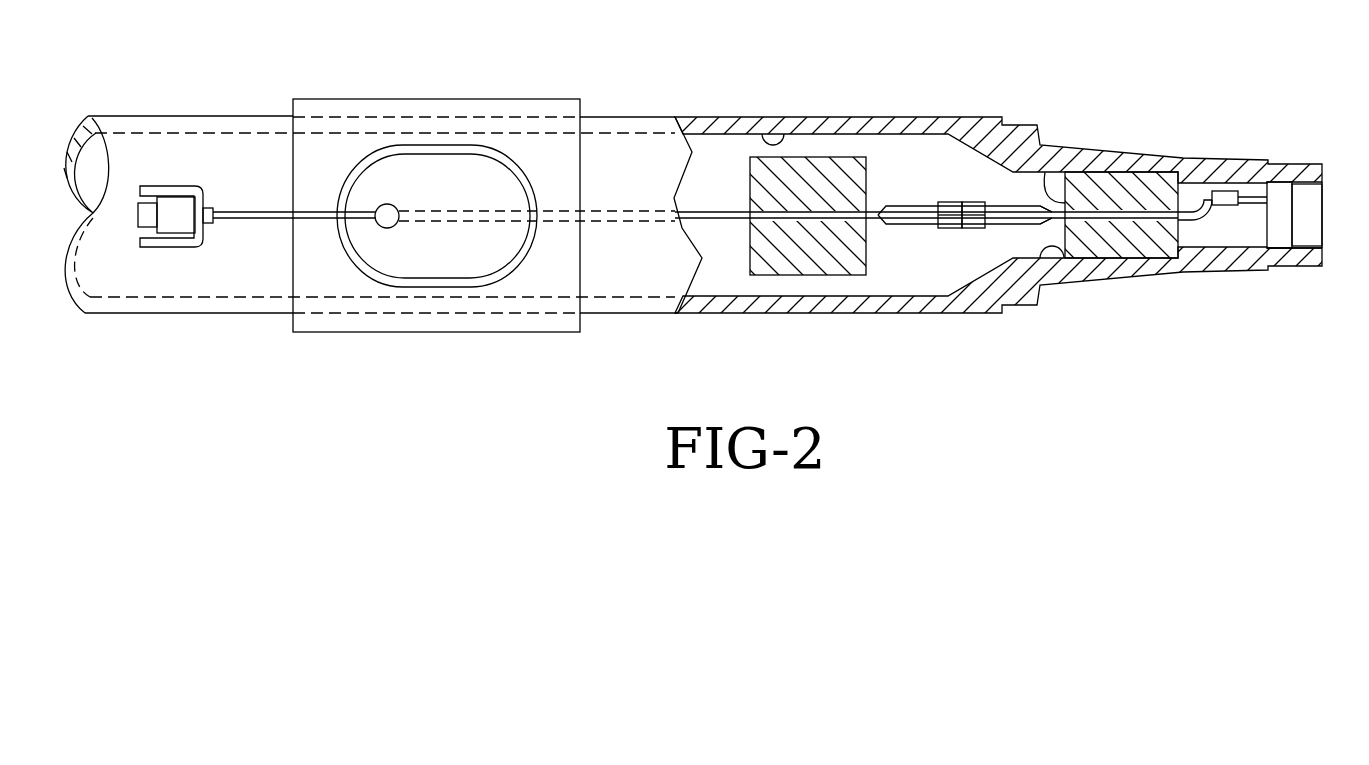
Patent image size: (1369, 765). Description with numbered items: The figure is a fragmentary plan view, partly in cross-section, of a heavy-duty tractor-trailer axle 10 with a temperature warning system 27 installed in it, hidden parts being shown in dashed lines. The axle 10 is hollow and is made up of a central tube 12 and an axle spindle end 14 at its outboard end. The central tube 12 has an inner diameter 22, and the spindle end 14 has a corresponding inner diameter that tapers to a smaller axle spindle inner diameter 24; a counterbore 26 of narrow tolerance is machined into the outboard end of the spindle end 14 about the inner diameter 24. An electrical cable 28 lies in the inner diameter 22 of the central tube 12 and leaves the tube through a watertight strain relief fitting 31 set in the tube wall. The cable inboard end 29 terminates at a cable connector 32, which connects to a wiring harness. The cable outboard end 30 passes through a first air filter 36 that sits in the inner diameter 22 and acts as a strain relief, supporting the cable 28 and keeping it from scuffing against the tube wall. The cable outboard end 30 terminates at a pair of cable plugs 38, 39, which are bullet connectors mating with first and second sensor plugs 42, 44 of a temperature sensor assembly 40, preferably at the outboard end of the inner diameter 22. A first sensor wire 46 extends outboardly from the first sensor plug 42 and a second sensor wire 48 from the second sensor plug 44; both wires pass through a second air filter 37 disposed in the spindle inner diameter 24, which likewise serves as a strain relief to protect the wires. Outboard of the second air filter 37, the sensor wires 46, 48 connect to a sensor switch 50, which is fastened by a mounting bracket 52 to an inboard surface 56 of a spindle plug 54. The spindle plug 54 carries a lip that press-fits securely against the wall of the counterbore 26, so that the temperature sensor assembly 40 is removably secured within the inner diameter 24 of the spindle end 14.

The axle 10 is at (640, 112).
The central tube 12 is at (204, 116).
The axle spindle end 14 is at (1120, 151).
The inner diameter 22 is at (773, 130).
The axle spindle inner diameter 24 is at (1053, 252).
The counterbore 26 is at (1305, 238).
The temperature warning system 27 is at (898, 252).
The electrical cable 28 is at (705, 208).
The cable inboard end 29 is at (248, 212).
The cable outboard end 30 is at (888, 205).
The watertight strain relief fitting 31 is at (386, 207).
The cable connector 32 is at (173, 187).
The first air filter 36 is at (820, 157).
The second air filter 37 is at (1055, 177).
The cable plug 38 is at (945, 202).
The cable plug 39 is at (947, 229).
The temperature sensor assembly 40 is at (1186, 184).
The first sensor plug 42 is at (975, 202).
The second sensor plug 44 is at (975, 229).
The first sensor wire 46 is at (1030, 206).
The second sensor wire 48 is at (1030, 225).
The sensor switch 50 is at (1219, 206).
The mounting bracket 52 is at (1251, 198).
The spindle plug 54 is at (1306, 206).
The inboard surface 56 is at (1267, 226).